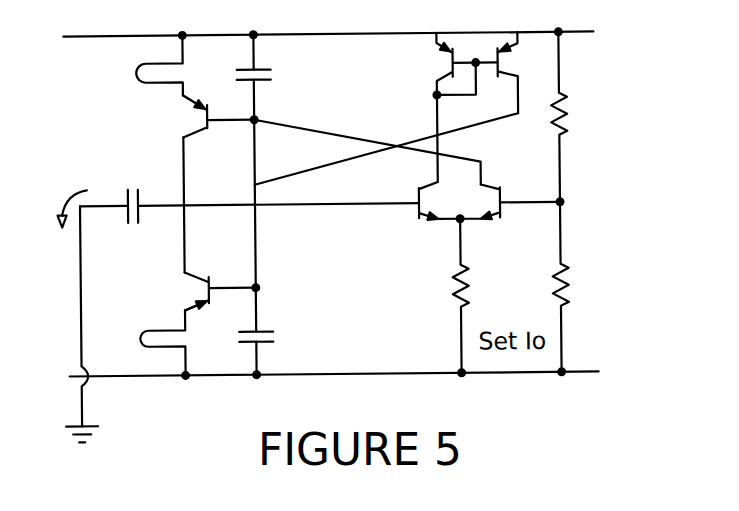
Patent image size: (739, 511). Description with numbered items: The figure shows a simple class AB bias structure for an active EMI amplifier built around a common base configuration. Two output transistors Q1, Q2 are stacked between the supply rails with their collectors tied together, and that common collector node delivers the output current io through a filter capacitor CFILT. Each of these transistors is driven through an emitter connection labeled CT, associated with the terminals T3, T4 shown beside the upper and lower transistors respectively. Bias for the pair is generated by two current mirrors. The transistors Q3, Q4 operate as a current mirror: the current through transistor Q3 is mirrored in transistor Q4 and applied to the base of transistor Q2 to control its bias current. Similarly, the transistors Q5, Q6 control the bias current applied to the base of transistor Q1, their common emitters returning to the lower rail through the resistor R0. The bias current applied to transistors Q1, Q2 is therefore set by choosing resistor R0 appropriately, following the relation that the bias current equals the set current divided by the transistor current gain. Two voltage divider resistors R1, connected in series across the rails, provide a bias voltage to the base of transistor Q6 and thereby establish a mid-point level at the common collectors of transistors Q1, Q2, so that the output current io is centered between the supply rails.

The transistor Q1 is at (219, 130).
The transistor Q2 is at (220, 271).
The transistor Q3 is at (448, 63).
The transistor Q4 is at (523, 72).
The transistor Q5 is at (436, 220).
The transistor Q6 is at (510, 221).
The terminal T3 is at (171, 108).
The terminal T4 is at (173, 304).
The terminal connection CT is at (139, 205).
The filter capacitor CFILT is at (131, 191).
The resistor R0 is at (479, 295).
The voltage divider resistors R1 is at (577, 201).
The output current io is at (64, 206).